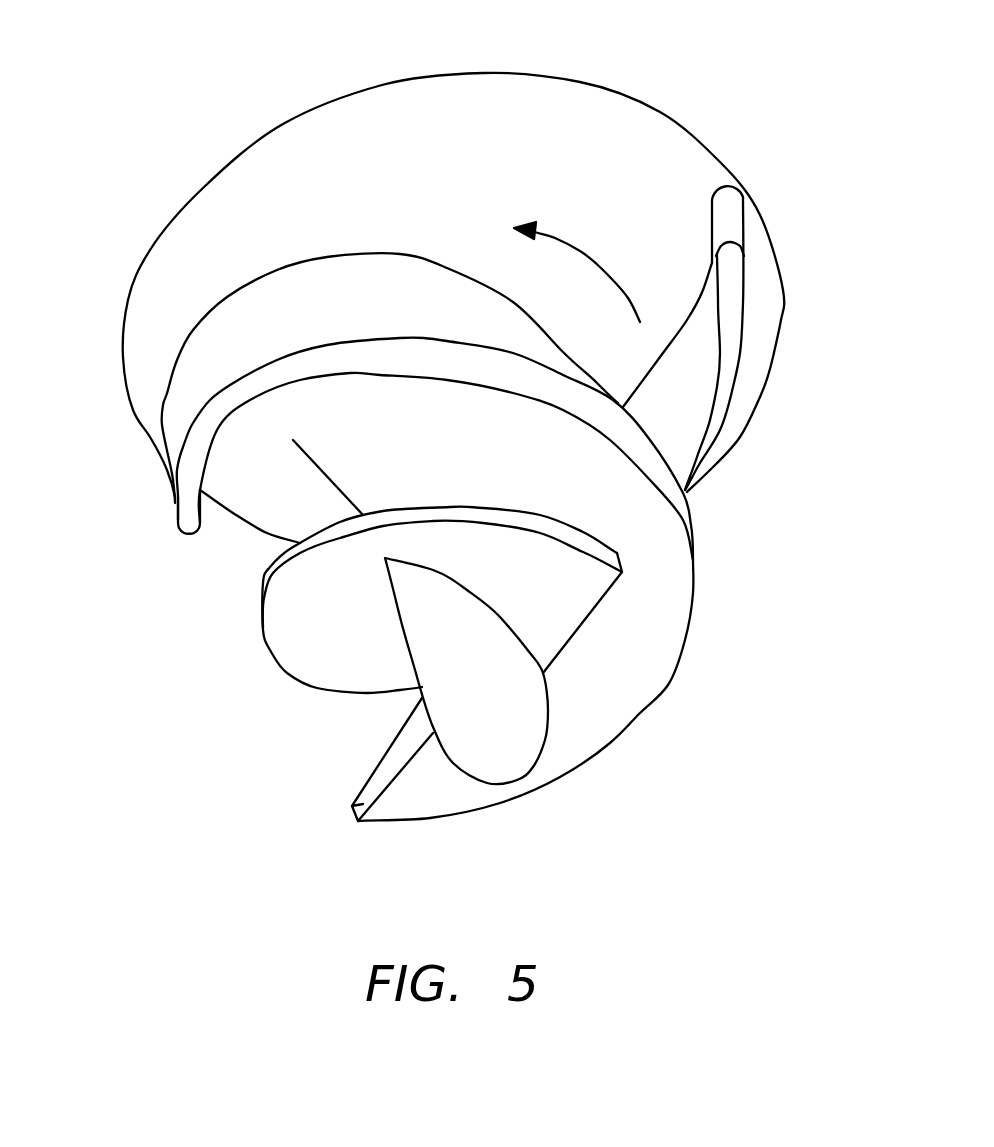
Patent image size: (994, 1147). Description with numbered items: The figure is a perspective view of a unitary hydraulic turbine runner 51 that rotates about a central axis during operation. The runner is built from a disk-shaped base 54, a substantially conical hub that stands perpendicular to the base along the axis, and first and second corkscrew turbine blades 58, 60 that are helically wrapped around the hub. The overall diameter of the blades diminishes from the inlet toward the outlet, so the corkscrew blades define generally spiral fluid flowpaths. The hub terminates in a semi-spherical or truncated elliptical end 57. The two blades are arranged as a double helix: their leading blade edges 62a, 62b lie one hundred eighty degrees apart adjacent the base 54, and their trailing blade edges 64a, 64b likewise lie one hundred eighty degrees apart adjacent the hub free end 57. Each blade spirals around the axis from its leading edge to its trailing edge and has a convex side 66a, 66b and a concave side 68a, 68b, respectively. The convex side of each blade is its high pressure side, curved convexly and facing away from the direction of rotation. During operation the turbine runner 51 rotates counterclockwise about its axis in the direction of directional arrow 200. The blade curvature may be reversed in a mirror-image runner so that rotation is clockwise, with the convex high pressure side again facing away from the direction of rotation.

The unitary hydraulic turbine runner 51 is at (747, 583).
The disk-shaped base 54 is at (443, 103).
The hub end 57 is at (540, 775).
The first corkscrew turbine blade 58 is at (688, 417).
The second corkscrew turbine blade 60 is at (210, 350).
The leading blade edge 62a is at (712, 184).
The leading blade edge 62b is at (193, 548).
The trailing blade edge 64a is at (590, 617).
The trailing blade edge 64b is at (357, 807).
The convex side 66a is at (750, 298).
The convex side 66b is at (277, 270).
The concave side 68a is at (700, 318).
The concave side 68b is at (593, 733).
The directional arrow 200 is at (597, 263).